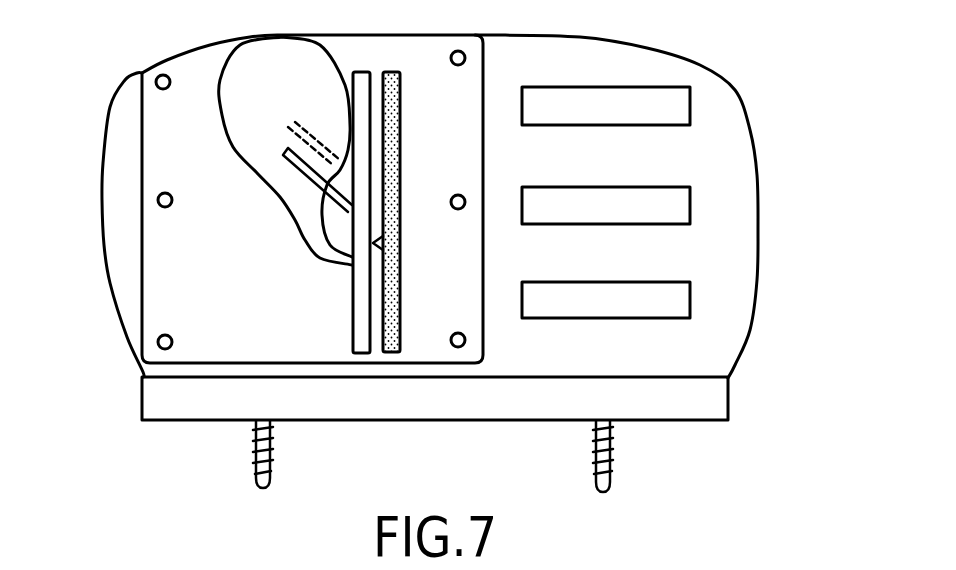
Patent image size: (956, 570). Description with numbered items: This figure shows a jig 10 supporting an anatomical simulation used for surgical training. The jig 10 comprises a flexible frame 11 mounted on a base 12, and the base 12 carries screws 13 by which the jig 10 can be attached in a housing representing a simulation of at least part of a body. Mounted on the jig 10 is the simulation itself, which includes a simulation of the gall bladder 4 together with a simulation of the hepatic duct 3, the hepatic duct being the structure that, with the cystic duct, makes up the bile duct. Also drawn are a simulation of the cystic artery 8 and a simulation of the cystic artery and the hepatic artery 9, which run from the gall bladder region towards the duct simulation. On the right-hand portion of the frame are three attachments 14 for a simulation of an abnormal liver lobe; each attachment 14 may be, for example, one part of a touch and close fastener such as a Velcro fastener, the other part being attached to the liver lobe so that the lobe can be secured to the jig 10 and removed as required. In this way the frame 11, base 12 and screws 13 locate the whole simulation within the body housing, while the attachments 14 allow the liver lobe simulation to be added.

The simulation of the hepatic duct 3 is at (365, 172).
The simulation of the gall bladder 4 is at (245, 118).
The simulation of the cystic artery 8 is at (318, 245).
The simulation of the cystic artery and the hepatic artery 9 is at (348, 217).
The jig 10 is at (768, 150).
The flexible frame 11 is at (102, 212).
The base 12 is at (155, 400).
The screws 13 is at (277, 452).
The attachments 14 is at (676, 100).